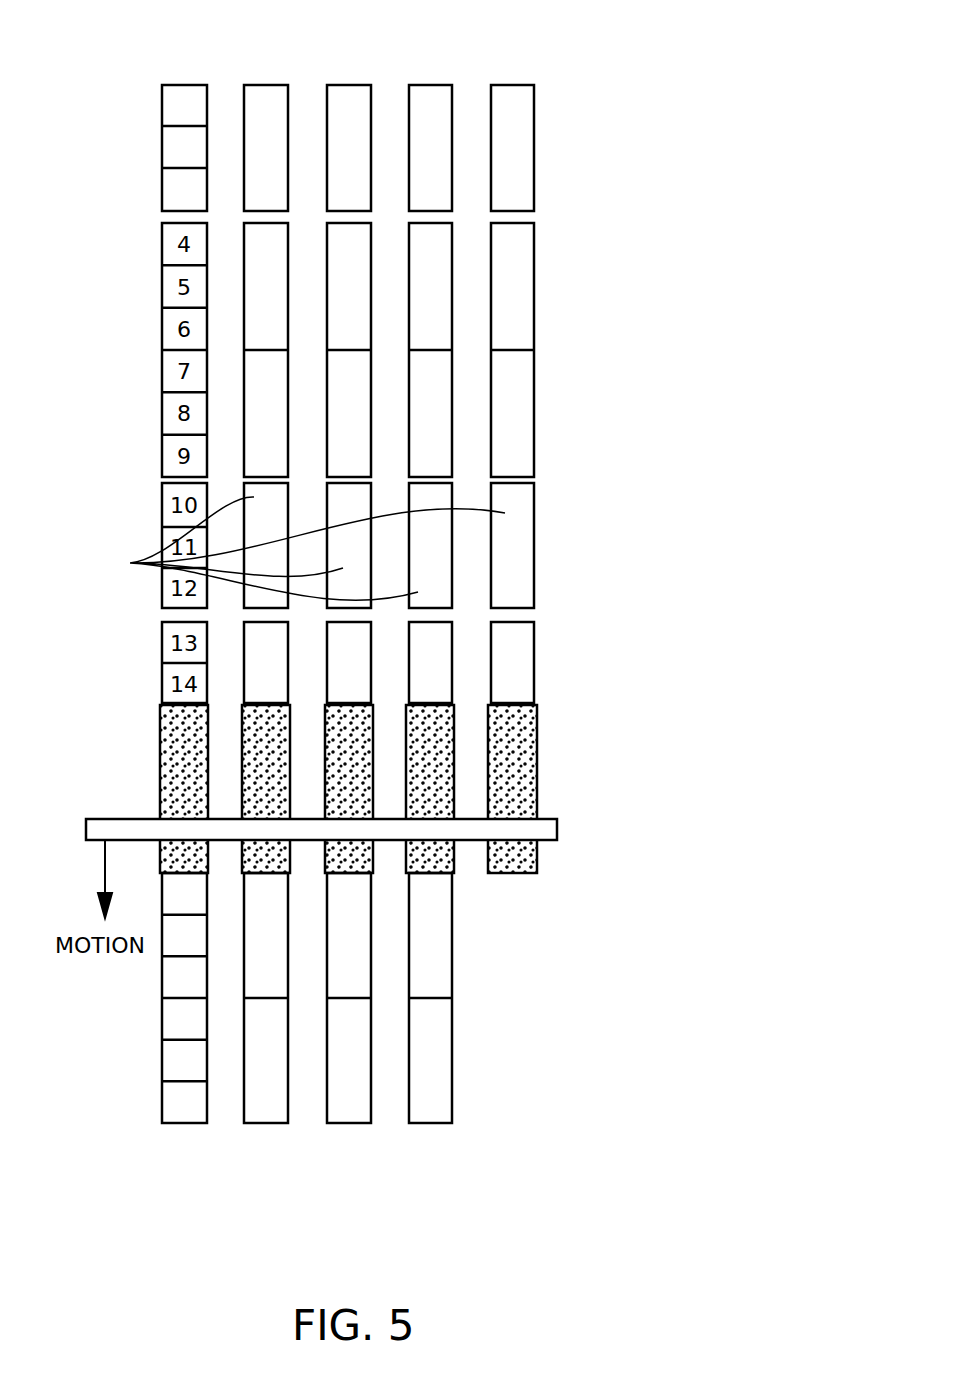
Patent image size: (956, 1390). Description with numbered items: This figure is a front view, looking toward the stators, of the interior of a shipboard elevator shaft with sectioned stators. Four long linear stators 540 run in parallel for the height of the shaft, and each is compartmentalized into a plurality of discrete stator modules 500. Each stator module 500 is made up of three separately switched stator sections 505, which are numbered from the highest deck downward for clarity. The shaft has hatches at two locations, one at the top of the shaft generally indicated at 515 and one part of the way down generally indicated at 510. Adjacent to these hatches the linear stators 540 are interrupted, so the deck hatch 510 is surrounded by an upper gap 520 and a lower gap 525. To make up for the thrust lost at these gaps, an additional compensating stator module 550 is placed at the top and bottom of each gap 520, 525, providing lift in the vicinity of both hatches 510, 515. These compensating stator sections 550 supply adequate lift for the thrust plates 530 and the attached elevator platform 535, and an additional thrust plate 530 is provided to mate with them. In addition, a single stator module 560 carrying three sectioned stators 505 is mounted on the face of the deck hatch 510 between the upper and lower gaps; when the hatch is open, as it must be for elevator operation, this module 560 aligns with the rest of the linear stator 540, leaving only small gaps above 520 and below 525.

The stator module 500 is at (348, 90).
The stator section 505 is at (167, 193).
The deck hatch 510 is at (553, 483).
The hatch at top of elevator shaft 515 is at (454, 115).
The upper gap 520 is at (522, 478).
The lower gap 525 is at (520, 616).
The thrust plate 530 is at (523, 735).
The elevator platform 535 is at (557, 829).
The linear stator 540 is at (317, 1170).
The compensating stator module 550 is at (513, 92).
The compensating stator module on deck hatch 560 is at (130, 563).